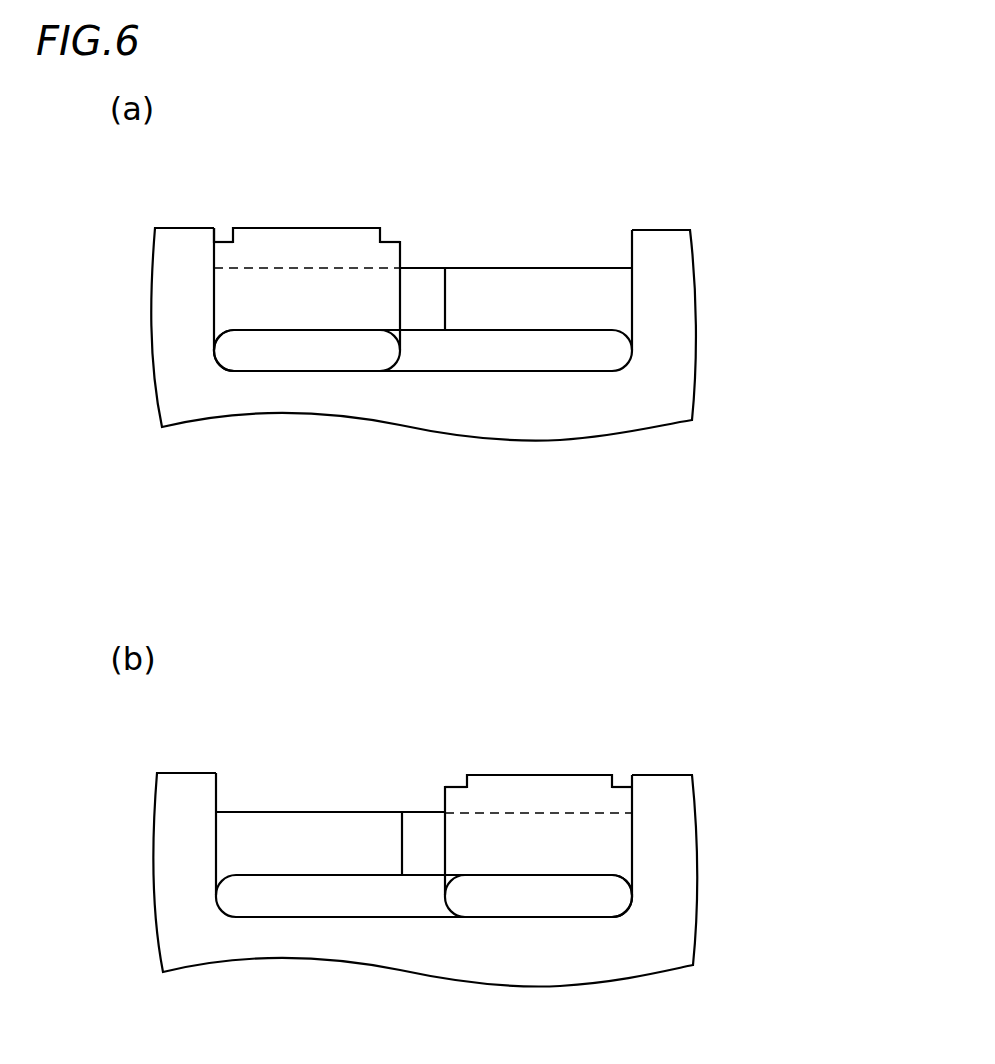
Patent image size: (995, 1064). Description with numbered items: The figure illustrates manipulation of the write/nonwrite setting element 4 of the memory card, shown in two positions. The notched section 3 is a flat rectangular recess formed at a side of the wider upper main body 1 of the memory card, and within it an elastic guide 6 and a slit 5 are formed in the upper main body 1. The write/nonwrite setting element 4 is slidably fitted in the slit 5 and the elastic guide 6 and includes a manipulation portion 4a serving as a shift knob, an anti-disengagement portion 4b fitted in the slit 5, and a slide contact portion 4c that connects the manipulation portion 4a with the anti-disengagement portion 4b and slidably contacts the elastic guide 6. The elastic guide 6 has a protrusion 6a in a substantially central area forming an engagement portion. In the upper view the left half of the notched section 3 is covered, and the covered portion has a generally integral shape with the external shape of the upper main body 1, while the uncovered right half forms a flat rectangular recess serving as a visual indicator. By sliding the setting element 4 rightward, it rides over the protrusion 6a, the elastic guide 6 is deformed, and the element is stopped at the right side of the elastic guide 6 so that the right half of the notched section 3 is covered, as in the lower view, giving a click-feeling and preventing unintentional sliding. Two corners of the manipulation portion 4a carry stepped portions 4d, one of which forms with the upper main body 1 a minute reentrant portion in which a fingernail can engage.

The upper main body 1 is at (652, 242).
The notched section 3 is at (495, 245).
The write/nonwrite setting element 4 is at (190, 146).
The manipulation portion 4a is at (335, 243).
The anti-disengagement portion 4b is at (300, 347).
The slide contact portion 4c is at (268, 295).
The stepped portion 4d is at (222, 238).
The slit 5 is at (528, 358).
The elastic guide 6 is at (560, 285).
The protrusion 6a is at (420, 283).